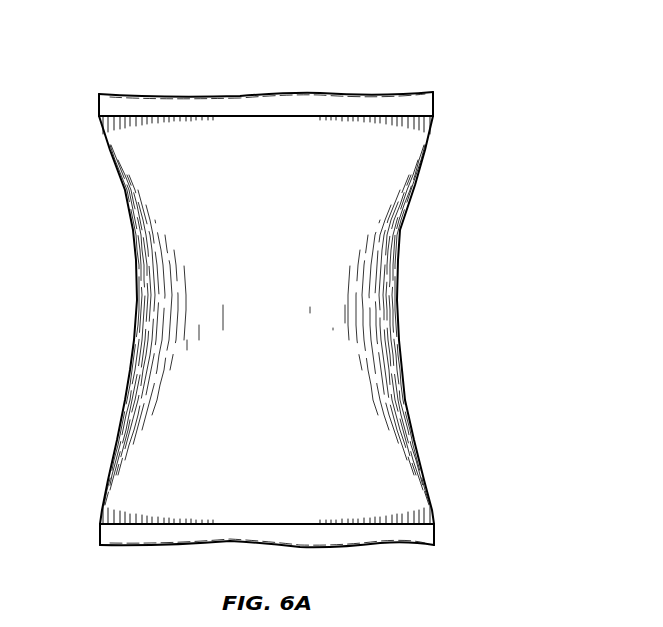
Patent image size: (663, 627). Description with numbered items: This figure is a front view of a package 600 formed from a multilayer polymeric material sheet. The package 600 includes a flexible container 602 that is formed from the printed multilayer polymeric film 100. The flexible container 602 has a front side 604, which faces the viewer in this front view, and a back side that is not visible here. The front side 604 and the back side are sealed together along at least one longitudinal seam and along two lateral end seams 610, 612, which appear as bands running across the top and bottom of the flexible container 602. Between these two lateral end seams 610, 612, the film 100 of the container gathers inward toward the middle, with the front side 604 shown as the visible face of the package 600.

The package 600 is at (415, 48).
The lateral end seam 610 is at (420, 106).
The lateral end seam 612 is at (422, 535).
The flexible container 602 is at (424, 188).
The front side 604 is at (390, 398).
The printed multilayer polymeric film 100 is at (147, 450).